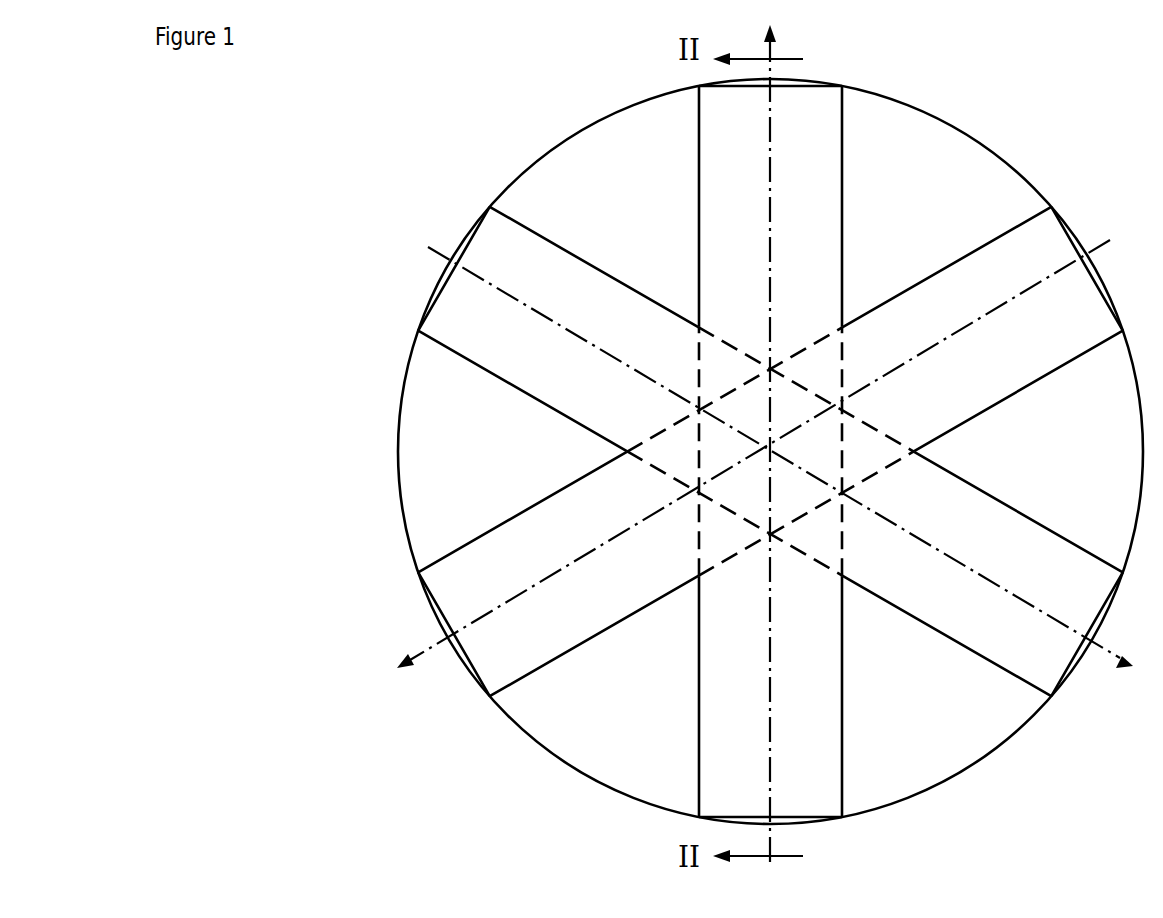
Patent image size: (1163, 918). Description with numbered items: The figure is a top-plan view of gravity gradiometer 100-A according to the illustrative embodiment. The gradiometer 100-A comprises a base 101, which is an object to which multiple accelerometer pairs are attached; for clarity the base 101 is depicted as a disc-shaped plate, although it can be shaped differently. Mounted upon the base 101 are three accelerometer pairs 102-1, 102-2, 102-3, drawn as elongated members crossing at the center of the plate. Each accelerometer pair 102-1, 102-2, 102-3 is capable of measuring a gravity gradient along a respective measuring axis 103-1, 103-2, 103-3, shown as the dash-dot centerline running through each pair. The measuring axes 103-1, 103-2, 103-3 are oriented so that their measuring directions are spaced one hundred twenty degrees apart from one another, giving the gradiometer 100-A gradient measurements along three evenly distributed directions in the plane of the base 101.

The gravity gradiometer 100-A is at (450, 150).
The base 101 is at (983, 193).
The accelerometer pair 102-1 is at (842, 192).
The accelerometer pair 102-2 is at (1022, 515).
The accelerometer pair 102-3 is at (510, 528).
The measuring axis 103-1 is at (770, 193).
The measuring axis 103-2 is at (925, 537).
The measuring axis 103-3 is at (612, 537).